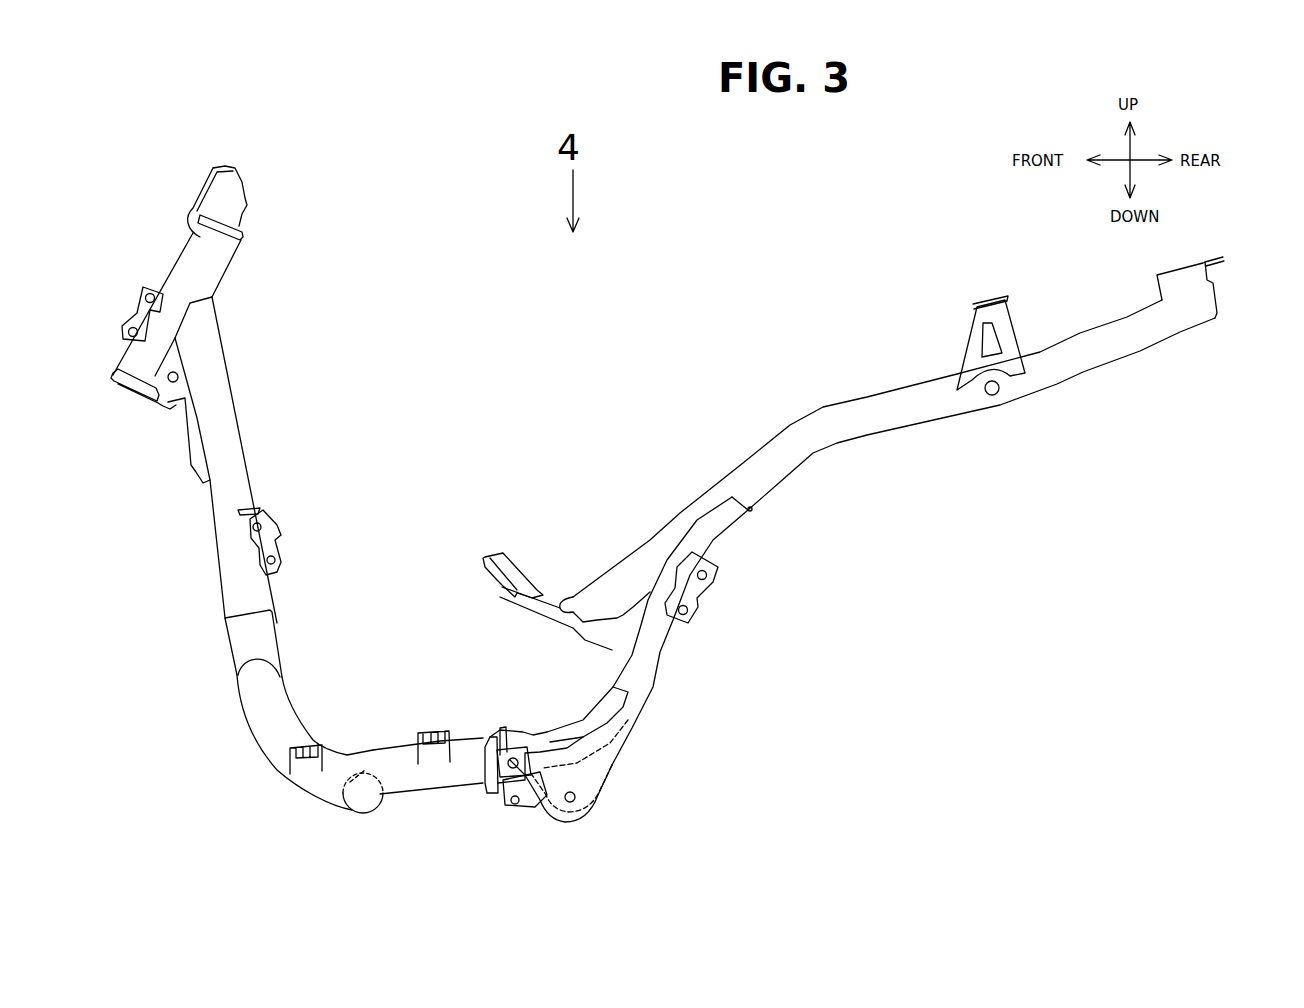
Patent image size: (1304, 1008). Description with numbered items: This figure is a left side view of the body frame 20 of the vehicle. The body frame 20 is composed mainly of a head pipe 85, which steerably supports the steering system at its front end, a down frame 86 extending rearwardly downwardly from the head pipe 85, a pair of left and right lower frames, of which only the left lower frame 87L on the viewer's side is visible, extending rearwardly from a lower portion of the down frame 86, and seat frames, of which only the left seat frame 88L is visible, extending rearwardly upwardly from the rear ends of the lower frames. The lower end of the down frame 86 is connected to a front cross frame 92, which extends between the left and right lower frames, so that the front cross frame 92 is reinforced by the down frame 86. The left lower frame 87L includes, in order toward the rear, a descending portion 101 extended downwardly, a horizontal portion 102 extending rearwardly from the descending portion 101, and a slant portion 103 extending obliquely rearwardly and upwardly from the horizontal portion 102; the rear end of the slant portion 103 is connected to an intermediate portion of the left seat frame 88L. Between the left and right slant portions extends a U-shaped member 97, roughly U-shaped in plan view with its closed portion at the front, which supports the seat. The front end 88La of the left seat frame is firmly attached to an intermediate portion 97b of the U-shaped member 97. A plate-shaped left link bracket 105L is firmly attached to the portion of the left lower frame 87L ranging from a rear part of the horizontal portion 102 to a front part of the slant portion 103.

The body frame 20 is at (141, 175).
The head pipe 85 is at (193, 272).
The down frame 86 is at (218, 435).
The left lower frame 87L is at (413, 773).
The left seat frame 88L is at (850, 415).
The front end of left seat frame 88La is at (570, 593).
The front cross frame 92 is at (363, 806).
The U-shaped member 97 is at (550, 603).
The intermediate portion of U-shaped member 97b is at (574, 628).
The descending portion 101 is at (260, 735).
The horizontal portion 102 is at (450, 772).
The slant portion 103 is at (655, 652).
The left link bracket 105L is at (590, 777).